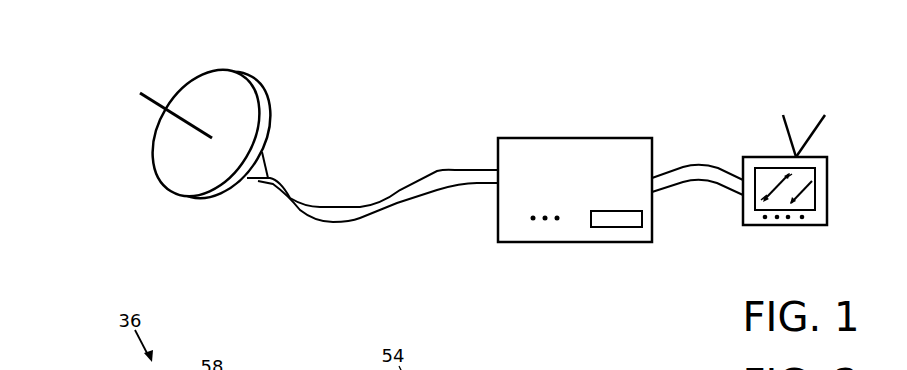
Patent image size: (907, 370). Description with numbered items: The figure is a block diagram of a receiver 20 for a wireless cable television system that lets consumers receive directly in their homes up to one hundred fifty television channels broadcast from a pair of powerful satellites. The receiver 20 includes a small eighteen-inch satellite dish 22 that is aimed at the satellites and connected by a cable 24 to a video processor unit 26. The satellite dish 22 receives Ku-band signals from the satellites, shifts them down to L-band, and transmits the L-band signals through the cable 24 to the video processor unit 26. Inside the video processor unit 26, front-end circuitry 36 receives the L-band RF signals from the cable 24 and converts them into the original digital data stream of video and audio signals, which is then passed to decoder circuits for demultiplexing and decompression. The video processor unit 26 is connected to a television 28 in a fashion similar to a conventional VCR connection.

The receiver 20 is at (402, 66).
The satellite dish 22 is at (163, 188).
The cable 24 is at (320, 207).
The video processor unit 26 is at (590, 137).
The television 28 is at (828, 190).
The front-end circuitry 36 is at (620, 225).